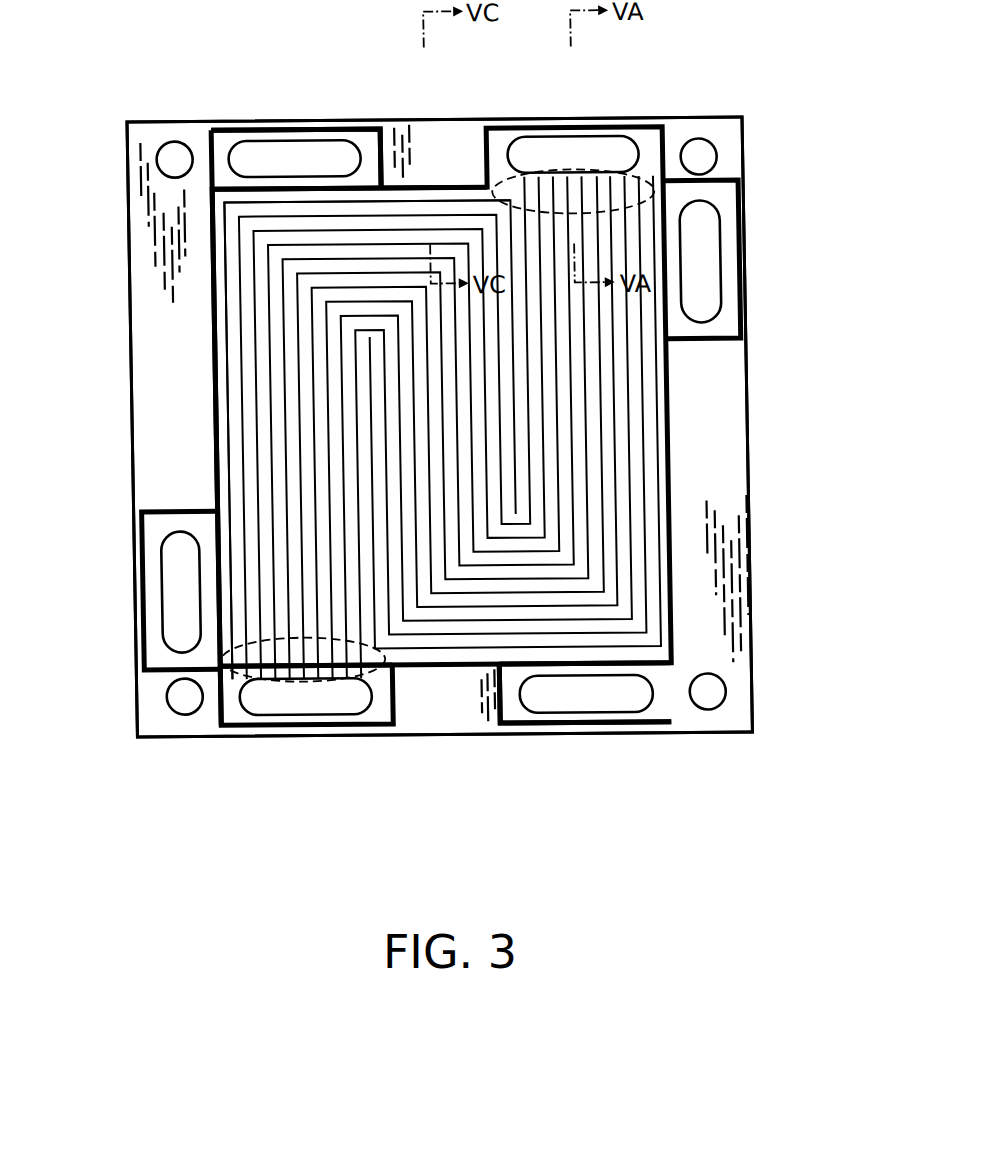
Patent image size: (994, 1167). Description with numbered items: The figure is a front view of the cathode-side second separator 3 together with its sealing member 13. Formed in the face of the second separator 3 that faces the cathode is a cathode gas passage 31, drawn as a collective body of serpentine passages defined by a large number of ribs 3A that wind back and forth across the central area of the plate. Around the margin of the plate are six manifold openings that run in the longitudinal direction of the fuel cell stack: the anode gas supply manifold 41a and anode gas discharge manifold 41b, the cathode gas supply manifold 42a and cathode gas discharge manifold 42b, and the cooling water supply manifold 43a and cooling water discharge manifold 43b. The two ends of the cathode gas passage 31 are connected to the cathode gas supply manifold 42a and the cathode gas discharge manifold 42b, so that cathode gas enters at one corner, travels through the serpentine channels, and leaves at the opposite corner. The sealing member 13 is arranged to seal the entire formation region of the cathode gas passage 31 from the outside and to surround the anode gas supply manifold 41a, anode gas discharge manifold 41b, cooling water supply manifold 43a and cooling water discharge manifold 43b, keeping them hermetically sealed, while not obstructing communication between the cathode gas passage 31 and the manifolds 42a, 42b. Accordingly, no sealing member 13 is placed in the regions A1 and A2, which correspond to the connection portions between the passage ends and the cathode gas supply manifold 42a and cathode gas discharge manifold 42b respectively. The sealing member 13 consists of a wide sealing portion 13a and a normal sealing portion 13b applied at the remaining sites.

The second separator 3 is at (127, 372).
The ribs 3A is at (222, 300).
The sealing member 13 is at (672, 497).
The wide sealing portion 13a is at (342, 190).
The normal sealing portion 13b is at (240, 131).
The cathode gas passage 31 is at (606, 424).
The anode gas supply manifold 41a is at (528, 703).
The anode gas discharge manifold 41b is at (245, 153).
The cathode gas supply manifold 42a is at (533, 153).
The cathode gas discharge manifold 42b is at (258, 706).
The cooling water supply manifold 43a is at (172, 598).
The cooling water discharge manifold 43b is at (703, 264).
The region A1 is at (647, 173).
The region A2 is at (226, 663).